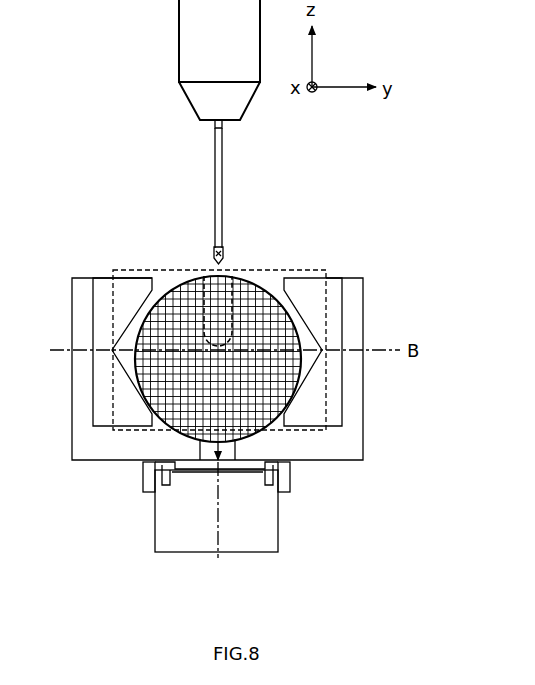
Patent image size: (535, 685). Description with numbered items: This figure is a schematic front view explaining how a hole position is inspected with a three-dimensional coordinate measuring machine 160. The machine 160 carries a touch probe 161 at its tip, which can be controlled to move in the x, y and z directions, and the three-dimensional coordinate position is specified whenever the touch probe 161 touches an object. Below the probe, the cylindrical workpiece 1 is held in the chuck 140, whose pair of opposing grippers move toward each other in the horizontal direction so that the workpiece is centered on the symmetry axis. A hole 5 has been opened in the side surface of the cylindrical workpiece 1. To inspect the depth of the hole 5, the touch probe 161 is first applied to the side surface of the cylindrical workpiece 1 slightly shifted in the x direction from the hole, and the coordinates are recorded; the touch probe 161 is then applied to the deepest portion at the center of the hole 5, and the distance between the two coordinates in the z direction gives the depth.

The three-dimensional coordinate measuring machine 160 is at (200, 176).
The touch probe 161 is at (213, 250).
The cylindrical workpiece 1 is at (263, 278).
The hole 5 is at (215, 273).
The chuck 140 is at (108, 275).